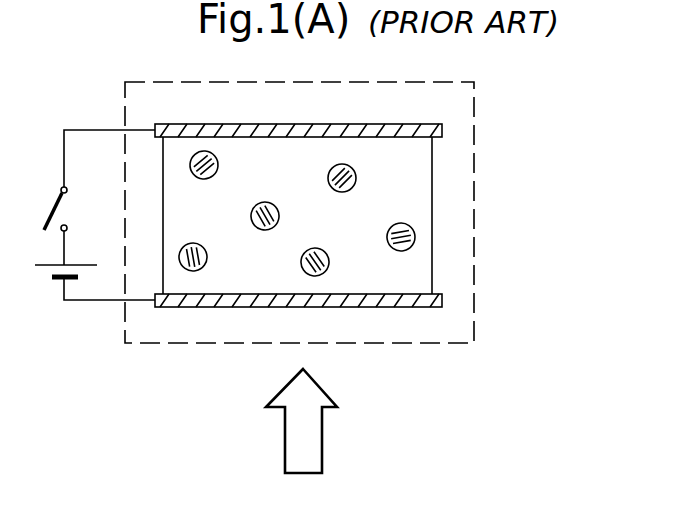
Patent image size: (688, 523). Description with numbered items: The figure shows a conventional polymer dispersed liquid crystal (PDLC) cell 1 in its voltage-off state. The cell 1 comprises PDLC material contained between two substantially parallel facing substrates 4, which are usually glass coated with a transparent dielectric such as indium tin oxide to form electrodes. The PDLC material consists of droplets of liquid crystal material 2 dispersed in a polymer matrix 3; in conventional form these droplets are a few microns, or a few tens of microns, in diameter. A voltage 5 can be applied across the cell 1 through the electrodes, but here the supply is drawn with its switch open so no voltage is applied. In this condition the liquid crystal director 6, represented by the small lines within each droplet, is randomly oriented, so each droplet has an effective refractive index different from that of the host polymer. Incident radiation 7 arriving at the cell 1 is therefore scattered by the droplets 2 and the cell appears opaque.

The polymer dispersed liquid crystal cell 1 is at (381, 71).
The droplets of liquid crystal material 2 is at (416, 238).
The polymer matrix 3 is at (412, 190).
The substrates 4 is at (442, 130).
The voltage 5 is at (44, 267).
The liquid crystal director 6 is at (315, 276).
The incident radiation 7 is at (322, 437).